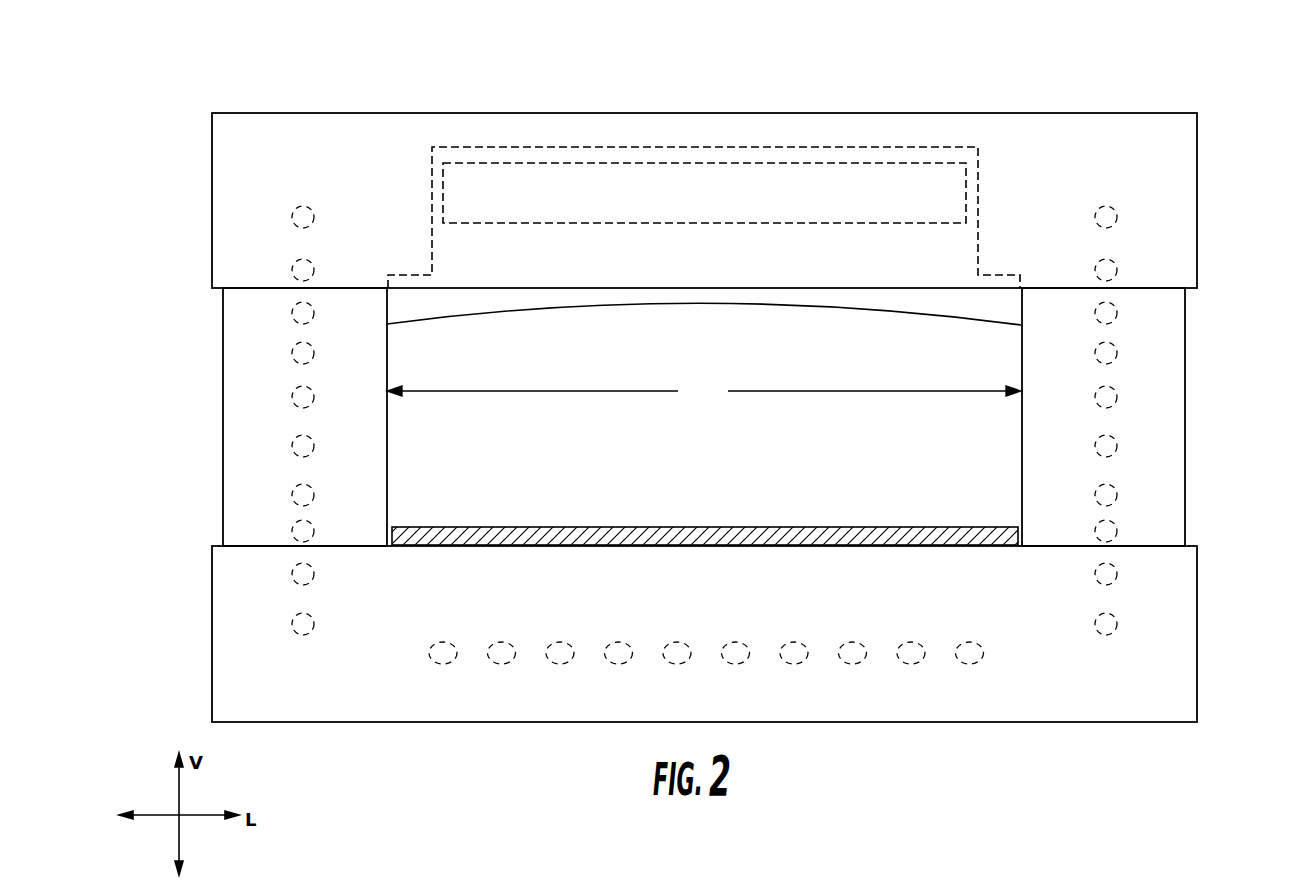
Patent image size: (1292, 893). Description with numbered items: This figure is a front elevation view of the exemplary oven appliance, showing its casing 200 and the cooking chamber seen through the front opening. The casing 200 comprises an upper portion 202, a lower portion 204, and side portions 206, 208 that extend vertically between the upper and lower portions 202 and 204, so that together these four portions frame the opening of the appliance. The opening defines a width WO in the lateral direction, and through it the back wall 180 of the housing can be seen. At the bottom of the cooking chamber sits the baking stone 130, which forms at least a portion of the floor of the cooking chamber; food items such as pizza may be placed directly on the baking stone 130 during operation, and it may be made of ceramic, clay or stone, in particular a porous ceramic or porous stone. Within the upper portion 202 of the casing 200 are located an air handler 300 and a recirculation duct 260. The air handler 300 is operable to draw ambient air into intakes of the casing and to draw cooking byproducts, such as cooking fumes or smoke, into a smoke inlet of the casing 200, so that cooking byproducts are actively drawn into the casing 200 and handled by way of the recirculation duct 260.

The casing 200 is at (700, 412).
The upper portion 202 is at (248, 113).
The lower portion 204 is at (1060, 722).
The side portion 206 is at (223, 452).
The side portion 208 is at (1185, 473).
The recirculation duct 260 is at (530, 147).
The air handler 300 is at (900, 163).
The baking stone 130 is at (622, 527).
The back wall 180 is at (766, 453).